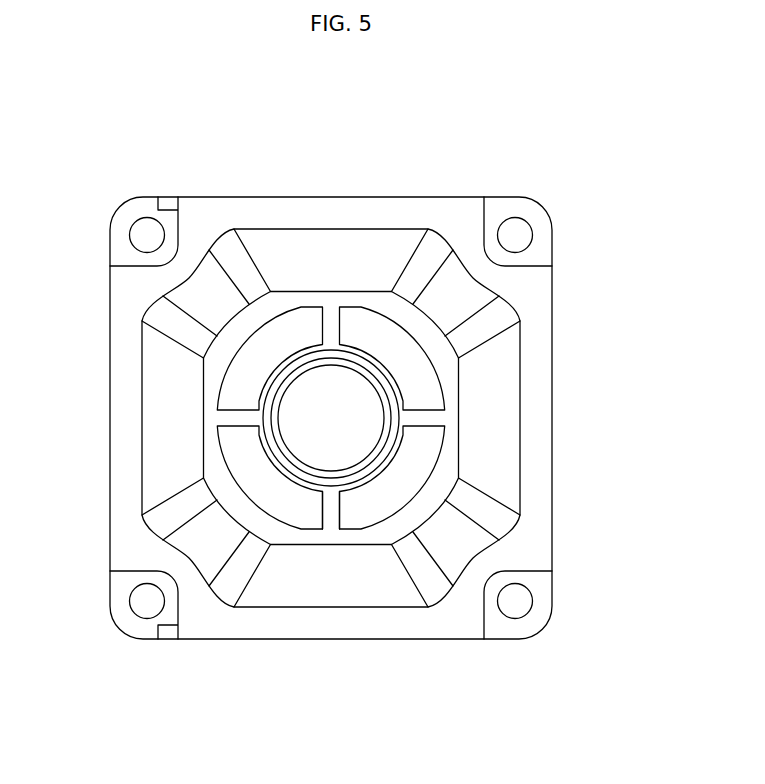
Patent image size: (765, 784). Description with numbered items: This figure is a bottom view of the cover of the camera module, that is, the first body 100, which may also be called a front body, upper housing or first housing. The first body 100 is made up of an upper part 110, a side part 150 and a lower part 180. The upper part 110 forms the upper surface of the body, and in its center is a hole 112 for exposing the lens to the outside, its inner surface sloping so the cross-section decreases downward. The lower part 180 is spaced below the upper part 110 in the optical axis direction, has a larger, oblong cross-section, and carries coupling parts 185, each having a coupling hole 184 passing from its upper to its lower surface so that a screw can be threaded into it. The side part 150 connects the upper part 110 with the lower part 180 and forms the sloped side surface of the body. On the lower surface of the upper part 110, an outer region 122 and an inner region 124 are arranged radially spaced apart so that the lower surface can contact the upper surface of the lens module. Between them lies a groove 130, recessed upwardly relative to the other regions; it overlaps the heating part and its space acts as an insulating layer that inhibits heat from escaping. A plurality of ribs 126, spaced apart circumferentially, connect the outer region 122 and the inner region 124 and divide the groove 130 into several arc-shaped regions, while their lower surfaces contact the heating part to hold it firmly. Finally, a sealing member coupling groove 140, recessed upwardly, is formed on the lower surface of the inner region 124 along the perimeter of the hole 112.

The first body 100 is at (100, 99).
The upper part 110 is at (440, 353).
The hole 112 is at (343, 401).
The outer region 122 is at (217, 460).
The inner region 124 is at (263, 440).
The rib 126 is at (233, 413).
The groove 130 is at (385, 487).
The sealing member coupling groove 140 is at (338, 477).
The side part 150 is at (487, 438).
The lower part 180 is at (540, 413).
The coupling hole 184 is at (515, 593).
The coupling part 185 is at (543, 597).